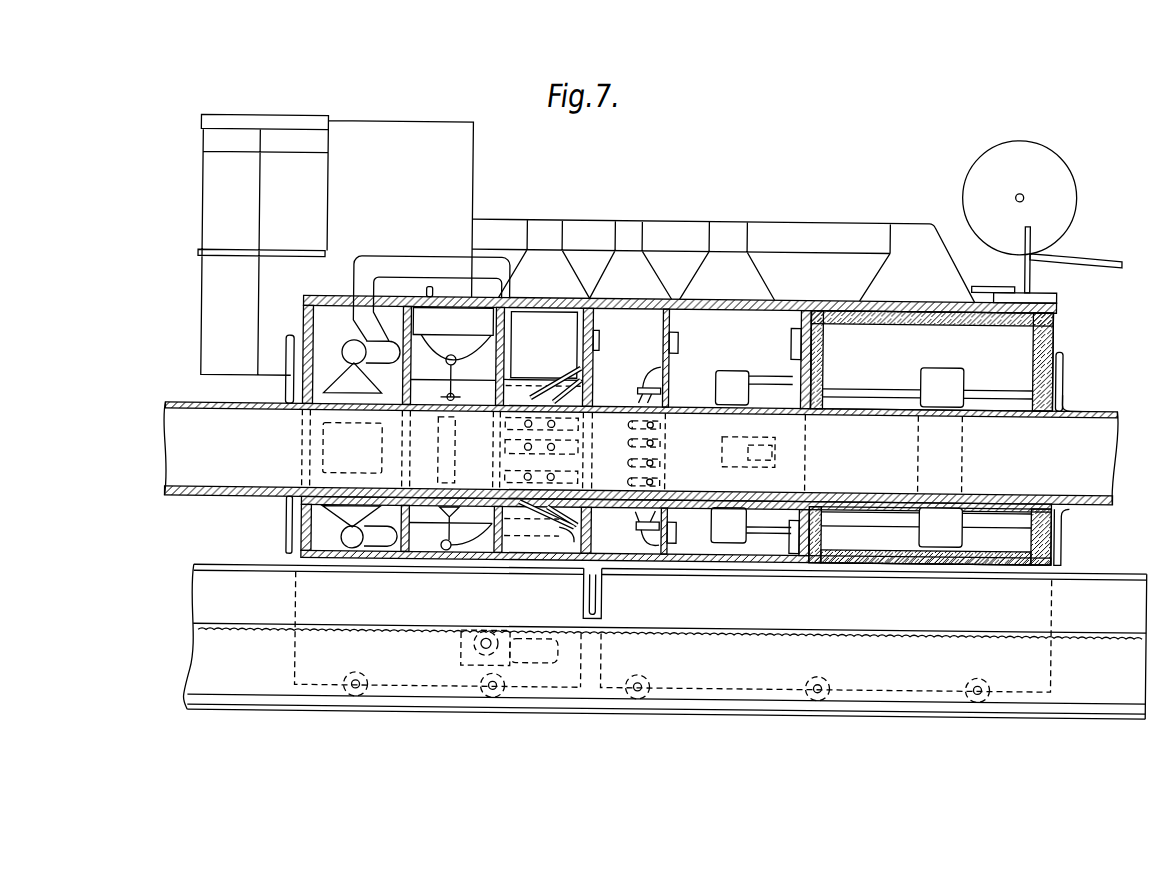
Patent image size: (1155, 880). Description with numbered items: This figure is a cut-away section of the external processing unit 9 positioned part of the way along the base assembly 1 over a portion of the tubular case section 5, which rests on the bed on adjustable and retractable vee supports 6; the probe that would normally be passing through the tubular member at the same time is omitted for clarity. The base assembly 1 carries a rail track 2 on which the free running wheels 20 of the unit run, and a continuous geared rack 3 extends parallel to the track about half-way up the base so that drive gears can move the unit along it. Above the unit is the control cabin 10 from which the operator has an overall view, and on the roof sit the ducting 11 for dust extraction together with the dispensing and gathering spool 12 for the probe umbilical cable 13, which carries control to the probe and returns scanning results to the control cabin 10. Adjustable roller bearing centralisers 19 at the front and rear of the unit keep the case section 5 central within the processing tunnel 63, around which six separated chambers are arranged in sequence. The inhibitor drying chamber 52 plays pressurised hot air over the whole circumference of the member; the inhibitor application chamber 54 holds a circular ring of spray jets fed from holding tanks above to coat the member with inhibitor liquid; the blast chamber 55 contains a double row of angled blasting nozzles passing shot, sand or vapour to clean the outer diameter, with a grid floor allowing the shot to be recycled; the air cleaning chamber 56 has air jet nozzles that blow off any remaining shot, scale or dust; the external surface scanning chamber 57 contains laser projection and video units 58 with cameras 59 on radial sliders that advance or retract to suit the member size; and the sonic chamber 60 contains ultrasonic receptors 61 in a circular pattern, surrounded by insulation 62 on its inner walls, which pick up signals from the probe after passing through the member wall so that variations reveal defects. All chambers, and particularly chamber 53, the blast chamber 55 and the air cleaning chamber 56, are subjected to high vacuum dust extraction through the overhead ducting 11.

The base assembly 1 is at (209, 649).
The rail track 2 is at (197, 712).
The geared rack 3 is at (205, 636).
The tubular case section 5 is at (172, 405).
The vee supports 6 is at (586, 594).
The external processing unit 9 is at (592, 300).
The control cabin 10 is at (413, 127).
The ducting 11 is at (652, 223).
The dispensing and gathering spool 12 is at (989, 153).
The probe umbilical cable 13 is at (1103, 255).
The roller bearing centralisers 19 is at (1064, 364).
The free running wheels 20 is at (352, 701).
The inhibitor drying chamber 52 is at (357, 483).
The chamber 53 is at (464, 667).
The inhibitor application chamber 54 is at (472, 473).
The blast chamber 55 is at (539, 467).
The air cleaning chamber 56 is at (616, 478).
The external surface scanning chamber 57 is at (692, 477).
The laser projection and video units 58 is at (733, 540).
The cameras 59 is at (762, 436).
The sonic chamber 60 is at (860, 480).
The ultrasonic receptors 61 is at (937, 540).
The insulation 62 is at (1000, 556).
The processing tunnel 63 is at (285, 404).